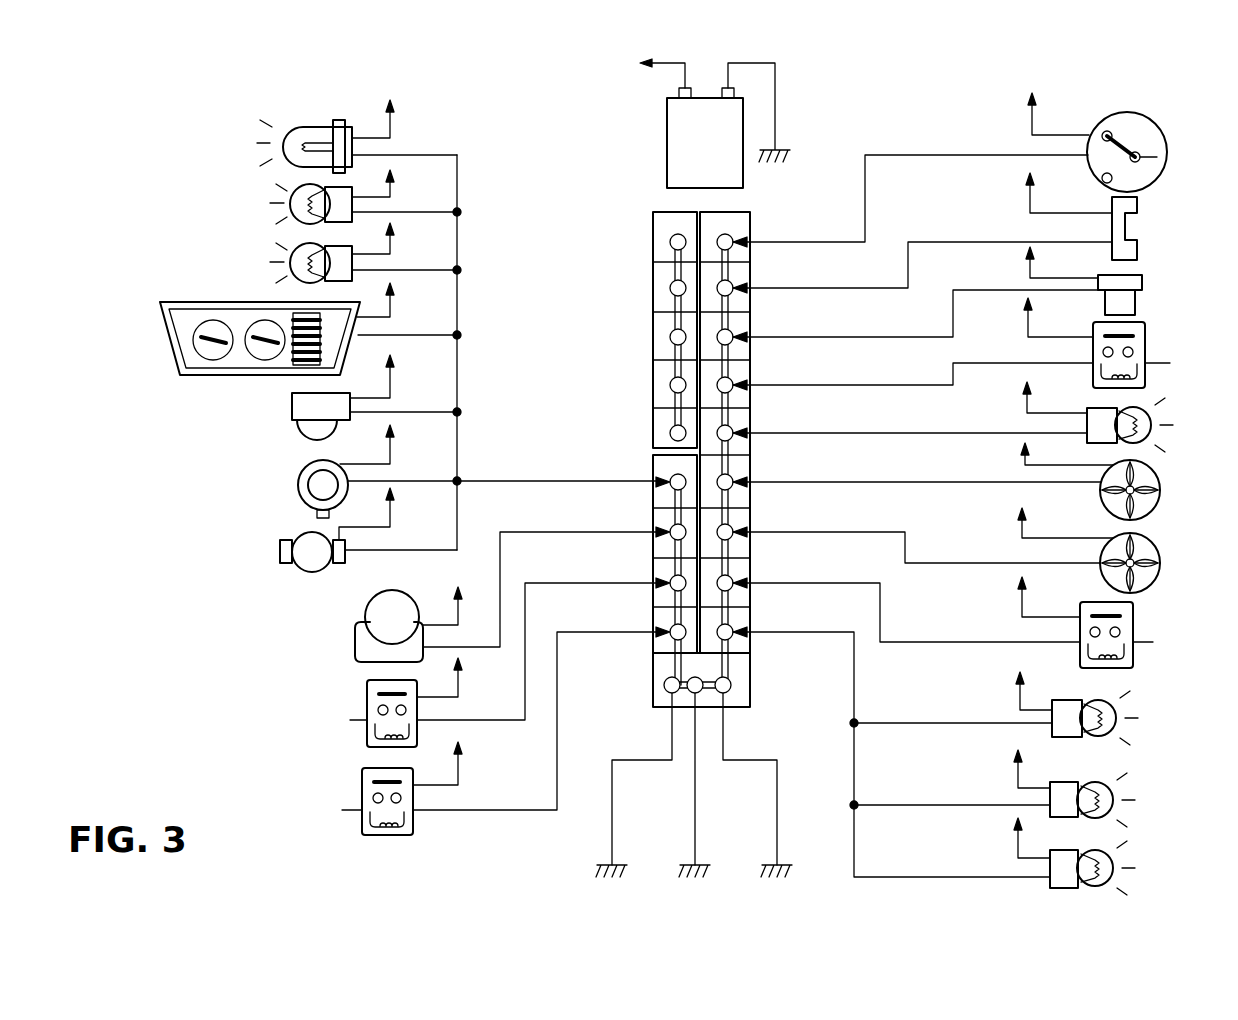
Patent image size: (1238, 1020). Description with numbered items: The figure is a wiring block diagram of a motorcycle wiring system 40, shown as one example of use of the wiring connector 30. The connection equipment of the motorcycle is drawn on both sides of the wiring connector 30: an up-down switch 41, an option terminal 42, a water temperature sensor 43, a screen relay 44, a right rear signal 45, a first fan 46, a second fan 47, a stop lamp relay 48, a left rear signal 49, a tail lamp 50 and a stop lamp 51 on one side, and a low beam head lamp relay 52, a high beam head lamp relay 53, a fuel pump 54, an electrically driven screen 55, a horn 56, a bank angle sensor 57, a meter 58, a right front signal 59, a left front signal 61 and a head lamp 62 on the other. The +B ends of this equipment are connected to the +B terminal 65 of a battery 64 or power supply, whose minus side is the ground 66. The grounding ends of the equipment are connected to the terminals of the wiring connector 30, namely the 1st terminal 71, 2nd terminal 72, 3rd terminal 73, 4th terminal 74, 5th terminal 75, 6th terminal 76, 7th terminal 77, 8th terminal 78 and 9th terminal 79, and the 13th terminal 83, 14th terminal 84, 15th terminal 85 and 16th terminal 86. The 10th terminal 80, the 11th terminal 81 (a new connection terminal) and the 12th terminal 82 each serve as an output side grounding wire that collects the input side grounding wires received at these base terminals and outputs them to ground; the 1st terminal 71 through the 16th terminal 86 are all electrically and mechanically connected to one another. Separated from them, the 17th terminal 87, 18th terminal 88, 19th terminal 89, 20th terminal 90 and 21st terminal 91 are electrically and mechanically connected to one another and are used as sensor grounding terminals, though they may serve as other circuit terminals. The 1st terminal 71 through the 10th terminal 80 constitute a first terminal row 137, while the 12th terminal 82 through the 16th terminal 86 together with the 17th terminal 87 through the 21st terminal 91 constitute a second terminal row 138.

The wiring connector 30 is at (593, 190).
The wiring system 40 is at (334, 90).
The up-down switch 41 is at (1148, 122).
The option terminal 42 is at (1138, 208).
The water temperature sensor 43 is at (1142, 280).
The screen relay 44 is at (1145, 335).
The right rear signal 45 is at (1140, 405).
The first fan 46 is at (1155, 475).
The second fan 47 is at (1155, 548).
The stop lamp relay 48 is at (1133, 615).
The left rear signal 49 is at (1115, 705).
The tail lamp 50 is at (1115, 785).
The stop lamp 51 is at (1115, 852).
The low beam head lamp relay 52 is at (362, 790).
The high beam head lamp relay 53 is at (367, 708).
The fuel pump 54 is at (355, 640).
The electrically driven screen 55 is at (282, 550).
The horn 56 is at (300, 486).
The bank angle sensor 57 is at (300, 438).
The meter 58 is at (160, 336).
The right front signal 59 is at (290, 257).
The left front signal 61 is at (290, 198).
The head lamp 62 is at (278, 138).
The battery 64 is at (656, 171).
The +B terminal 65 is at (678, 90).
The ground 66 is at (717, 90).
The 1st terminal 71 is at (742, 229).
The 2nd terminal 72 is at (742, 275).
The 3rd terminal 73 is at (742, 324).
The 4th terminal 74 is at (742, 372).
The 5th terminal 75 is at (742, 420).
The 6th terminal 76 is at (742, 469).
The 7th terminal 77 is at (742, 519).
The 8th terminal 78 is at (742, 570).
The 9th terminal 79 is at (742, 619).
The 10th terminal 80 is at (735, 678).
The 11th terminal 81 is at (690, 700).
The 12th terminal 82 is at (662, 694).
The 13th terminal 83 is at (653, 639).
The 14th terminal 84 is at (653, 589).
The 15th terminal 85 is at (653, 538).
The 16th terminal 86 is at (653, 488).
The 17th terminal 87 is at (653, 439).
The 18th terminal 88 is at (653, 391).
The 19th terminal 89 is at (653, 343).
The 20th terminal 90 is at (653, 294).
The 21st terminal 91 is at (653, 248).
The first terminal row 137 is at (834, 413).
The second terminal row 138 is at (578, 412).